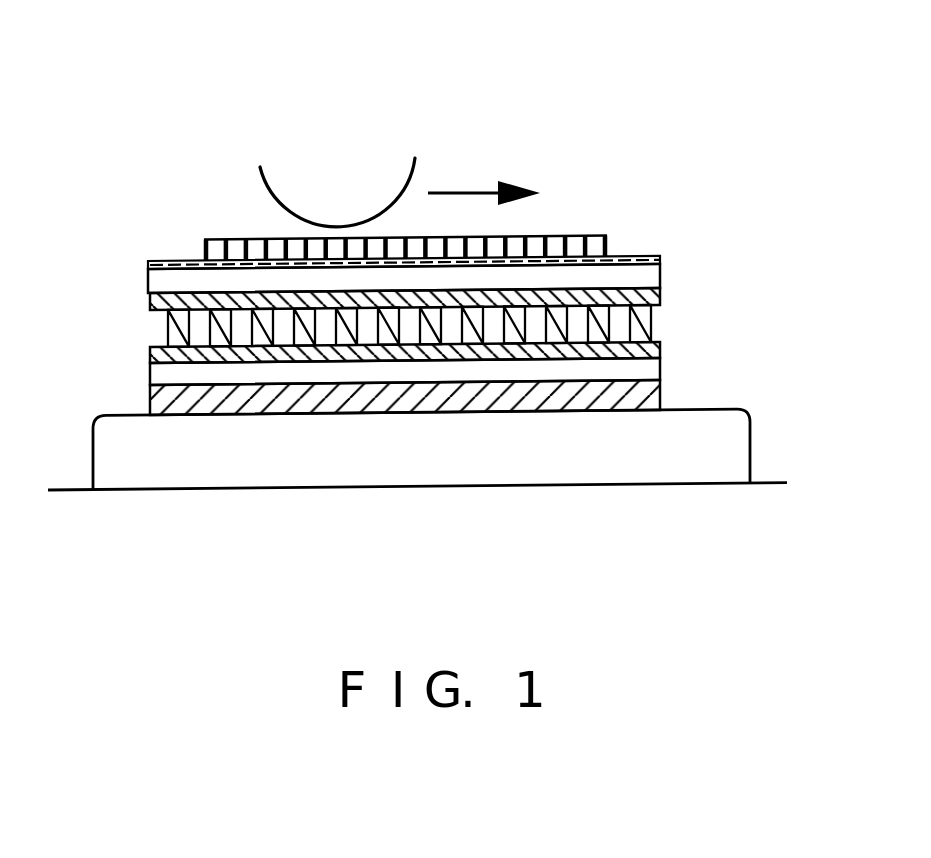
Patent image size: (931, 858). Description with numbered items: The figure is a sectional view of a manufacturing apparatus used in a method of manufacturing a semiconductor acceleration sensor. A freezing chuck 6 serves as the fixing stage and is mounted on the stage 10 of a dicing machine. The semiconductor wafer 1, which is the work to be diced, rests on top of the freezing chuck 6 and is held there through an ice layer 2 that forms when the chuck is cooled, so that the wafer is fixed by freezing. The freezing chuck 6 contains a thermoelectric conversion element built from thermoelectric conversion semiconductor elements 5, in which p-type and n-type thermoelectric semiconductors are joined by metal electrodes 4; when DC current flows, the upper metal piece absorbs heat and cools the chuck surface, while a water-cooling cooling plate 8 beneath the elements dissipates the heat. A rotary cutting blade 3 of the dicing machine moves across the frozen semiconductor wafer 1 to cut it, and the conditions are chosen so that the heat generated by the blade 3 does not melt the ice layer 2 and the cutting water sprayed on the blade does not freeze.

The semiconductor wafer 1 is at (596, 238).
The ice layer 2 is at (172, 262).
The rotary cutting blade 3 is at (373, 188).
The metal electrode 4 is at (636, 290).
The thermoelectric conversion semiconductor elements 5 is at (637, 333).
The freezing chuck 6 is at (167, 282).
The water-cooling cooling plate 8 is at (643, 396).
The stage 10 is at (517, 445).